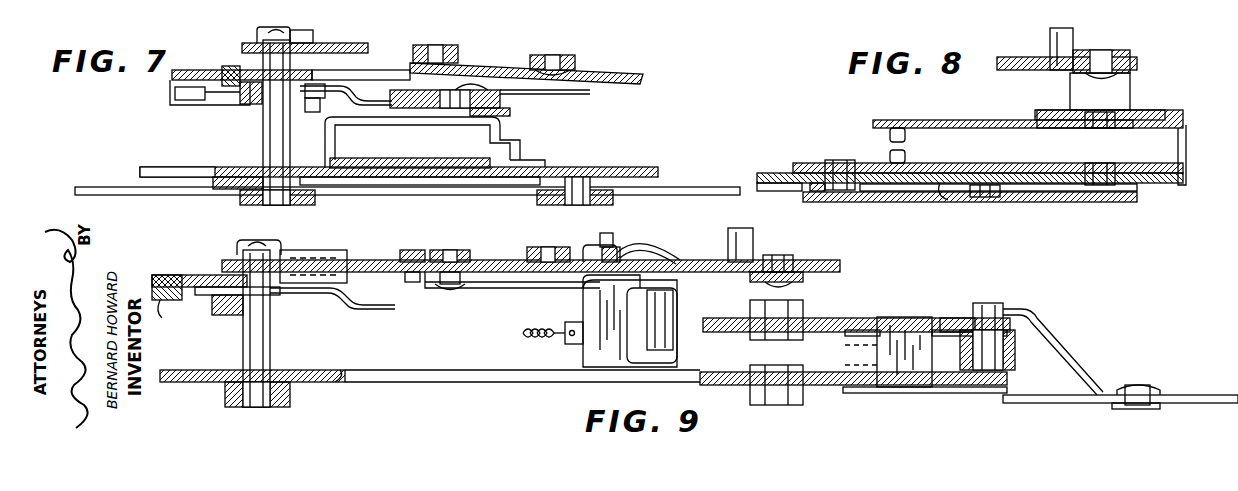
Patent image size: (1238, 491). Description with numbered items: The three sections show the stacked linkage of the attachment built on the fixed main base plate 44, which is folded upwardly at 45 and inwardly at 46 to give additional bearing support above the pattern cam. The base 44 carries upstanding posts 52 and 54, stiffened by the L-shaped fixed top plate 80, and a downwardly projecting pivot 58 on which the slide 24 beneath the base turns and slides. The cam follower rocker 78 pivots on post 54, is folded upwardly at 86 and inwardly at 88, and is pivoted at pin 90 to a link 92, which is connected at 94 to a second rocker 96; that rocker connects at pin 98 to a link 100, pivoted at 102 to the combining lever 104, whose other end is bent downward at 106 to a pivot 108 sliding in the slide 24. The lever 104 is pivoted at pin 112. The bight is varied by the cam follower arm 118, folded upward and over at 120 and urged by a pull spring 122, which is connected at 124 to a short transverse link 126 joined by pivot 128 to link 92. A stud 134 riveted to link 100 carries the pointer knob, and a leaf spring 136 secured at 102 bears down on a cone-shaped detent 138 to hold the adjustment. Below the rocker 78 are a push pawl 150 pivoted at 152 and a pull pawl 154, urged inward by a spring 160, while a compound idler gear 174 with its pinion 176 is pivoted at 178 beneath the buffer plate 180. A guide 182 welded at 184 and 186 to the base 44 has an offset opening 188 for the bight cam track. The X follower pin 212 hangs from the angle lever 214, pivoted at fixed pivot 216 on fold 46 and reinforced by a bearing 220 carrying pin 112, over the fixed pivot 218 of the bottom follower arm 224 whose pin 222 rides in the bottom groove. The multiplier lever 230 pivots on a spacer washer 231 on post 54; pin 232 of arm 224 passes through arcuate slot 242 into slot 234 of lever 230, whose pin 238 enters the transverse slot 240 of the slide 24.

In FIG. 7, the slide 24 is at (183, 194).
In FIG. 8, the slide 24 is at (858, 202).
In FIG. 9, the slide 24 is at (1066, 405).
In FIG. 7, the main base plate 44 is at (626, 168).
In FIG. 8, the main base plate 44 is at (1185, 178).
In FIG. 9, the main base plate 44 is at (348, 372).
In FIG. 8, the upward fold of base plate 45 is at (1183, 148).
In FIG. 9, the upward fold of base plate 45 is at (916, 393).
In FIG. 8, the inward fold of base plate 46 is at (1170, 110).
In FIG. 9, the inward fold of base plate 46 is at (842, 333).
In FIG. 9, the post 52 is at (674, 305).
In FIG. 7, the post 54 is at (272, 28).
In FIG. 9, the post 54 is at (272, 345).
In FIG. 7, the pivot 58 is at (566, 203).
In FIG. 7, the rocker 78 is at (172, 77).
In FIG. 9, the rocker 78 is at (203, 275).
In FIG. 7, the fixed top plate 80 is at (256, 41).
In FIG. 9, the upward fold of rocker 86 is at (312, 252).
In FIG. 7, the inward fold of rocker 88 is at (324, 44).
In FIG. 9, the inward fold of rocker 88 is at (358, 258).
In FIG. 9, the pivot pin 90 is at (414, 250).
In FIG. 7, the link 92 is at (472, 67).
In FIG. 9, the link 92 is at (494, 262).
In FIG. 9, the connection 94 is at (552, 248).
In FIG. 9, the second rocker 96 is at (585, 258).
In FIG. 9, the pin 98 is at (590, 290).
In FIG. 8, the link 100 is at (1016, 71).
In FIG. 9, the link 100 is at (715, 273).
In FIG. 8, the pivot 102 is at (1112, 50).
In FIG. 9, the pivot 102 is at (790, 252).
In FIG. 8, the combining lever 104 is at (1135, 78).
In FIG. 9, the combining lever 104 is at (900, 318).
In FIG. 9, the downward bend of combining lever 106 is at (1046, 328).
In FIG. 9, the pivot 108 is at (1137, 385).
In FIG. 9, the pivot pin 112 is at (1000, 294).
In FIG. 7, the cam follower arm 118 is at (622, 74).
In FIG. 9, the folded part of cam follower 120 is at (592, 355).
In FIG. 9, the pull spring 122 is at (544, 343).
In FIG. 7, the connection 124 is at (548, 56).
In FIG. 7, the transverse link 126 is at (508, 70).
In FIG. 7, the pivot 128 is at (440, 58).
In FIG. 9, the pivot 128 is at (456, 251).
In FIG. 8, the stud 134 is at (1073, 38).
In FIG. 9, the stud 134 is at (728, 240).
In FIG. 8, the leaf spring 136 is at (1017, 57).
In FIG. 9, the leaf spring 136 is at (676, 262).
In FIG. 9, the cone-shaped detent 138 is at (620, 238).
In FIG. 7, the push pawl 150 is at (210, 100).
In FIG. 9, the push pawl 150 is at (162, 300).
In FIG. 7, the pivot 152 is at (231, 70).
In FIG. 9, the pivot 152 is at (172, 275).
In FIG. 7, the pull pawl 154 is at (352, 92).
In FIG. 9, the pull pawl 154 is at (378, 306).
In FIG. 7, the spring 160 is at (248, 103).
In FIG. 9, the spring 160 is at (222, 318).
In FIG. 7, the idler gear 174 is at (505, 100).
In FIG. 7, the pinion 176 is at (512, 112).
In FIG. 7, the pivot 178 is at (486, 128).
In FIG. 7, the buffer plate 180 is at (590, 92).
In FIG. 7, the guide 182 is at (388, 126).
In FIG. 7, the weld 184 is at (309, 160).
In FIG. 7, the weld 186 is at (542, 160).
In FIG. 7, the offset opening 188 is at (503, 148).
In FIG. 8, the cam follower pin 212 is at (888, 134).
In FIG. 8, the angle lever 214 is at (985, 127).
In FIG. 9, the angle lever 214 is at (745, 333).
In FIG. 8, the fixed pivot 216 is at (1100, 128).
In FIG. 9, the fixed pivot 216 is at (780, 312).
In FIG. 8, the fixed pivot 218 is at (1093, 165).
In FIG. 9, the fixed pivot 218 is at (774, 402).
In FIG. 9, the bearing 220 is at (1016, 350).
In FIG. 8, the cam follower pin 222 is at (889, 156).
In FIG. 8, the cam follower arm 224 is at (1025, 164).
In FIG. 9, the cam follower arm 224 is at (810, 368).
In FIG. 7, the multiplier lever 230 is at (258, 183).
In FIG. 8, the multiplier lever 230 is at (795, 190).
In FIG. 9, the multiplier lever 230 is at (326, 397).
In FIG. 7, the spacer washer 231 is at (262, 202).
In FIG. 9, the spacer washer 231 is at (226, 395).
In FIG. 8, the pin 232 is at (830, 172).
In FIG. 8, the slot 234 is at (872, 190).
In FIG. 8, the pin 238 is at (992, 198).
In FIG. 8, the transverse slot 240 is at (946, 202).
In FIG. 8, the arcuate slot 242 is at (815, 192).